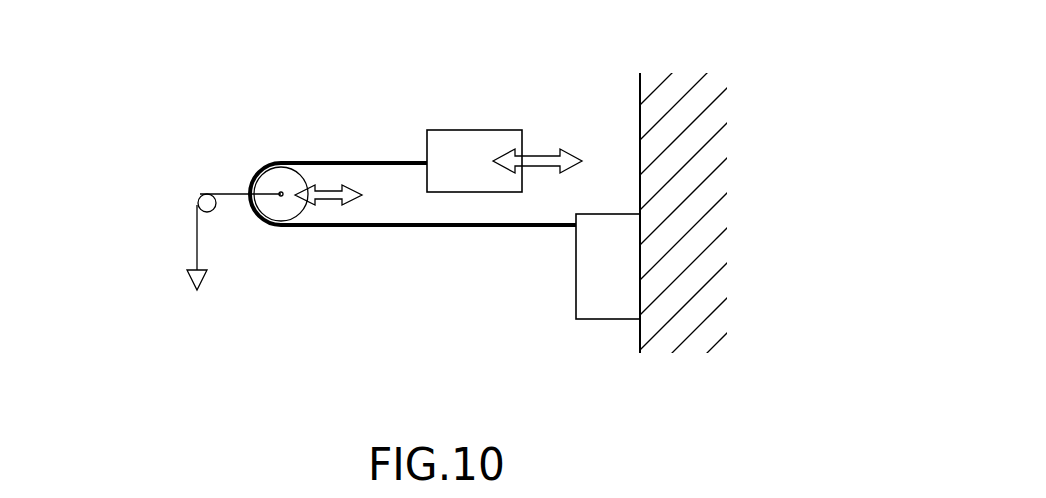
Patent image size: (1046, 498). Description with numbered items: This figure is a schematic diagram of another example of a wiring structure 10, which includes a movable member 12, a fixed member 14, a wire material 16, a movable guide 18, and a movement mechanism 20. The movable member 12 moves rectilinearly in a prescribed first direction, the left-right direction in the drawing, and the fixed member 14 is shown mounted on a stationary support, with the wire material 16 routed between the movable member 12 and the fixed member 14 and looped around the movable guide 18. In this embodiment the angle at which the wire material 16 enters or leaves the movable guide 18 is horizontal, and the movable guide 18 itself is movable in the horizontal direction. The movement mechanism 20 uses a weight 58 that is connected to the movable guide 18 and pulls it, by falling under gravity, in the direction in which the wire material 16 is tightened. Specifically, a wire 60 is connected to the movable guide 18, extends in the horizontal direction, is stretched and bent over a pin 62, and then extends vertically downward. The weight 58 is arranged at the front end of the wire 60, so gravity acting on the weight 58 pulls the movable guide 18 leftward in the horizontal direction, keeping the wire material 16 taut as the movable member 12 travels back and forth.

The wiring structure 10 is at (342, 106).
The movable member 12 is at (487, 130).
The fixed member 14 is at (608, 313).
The wire material 16 is at (369, 228).
The movable guide 18 is at (278, 178).
The movement mechanism 20 is at (183, 225).
The weight 58 is at (188, 277).
The wire 60 is at (226, 192).
The pin 62 is at (214, 209).